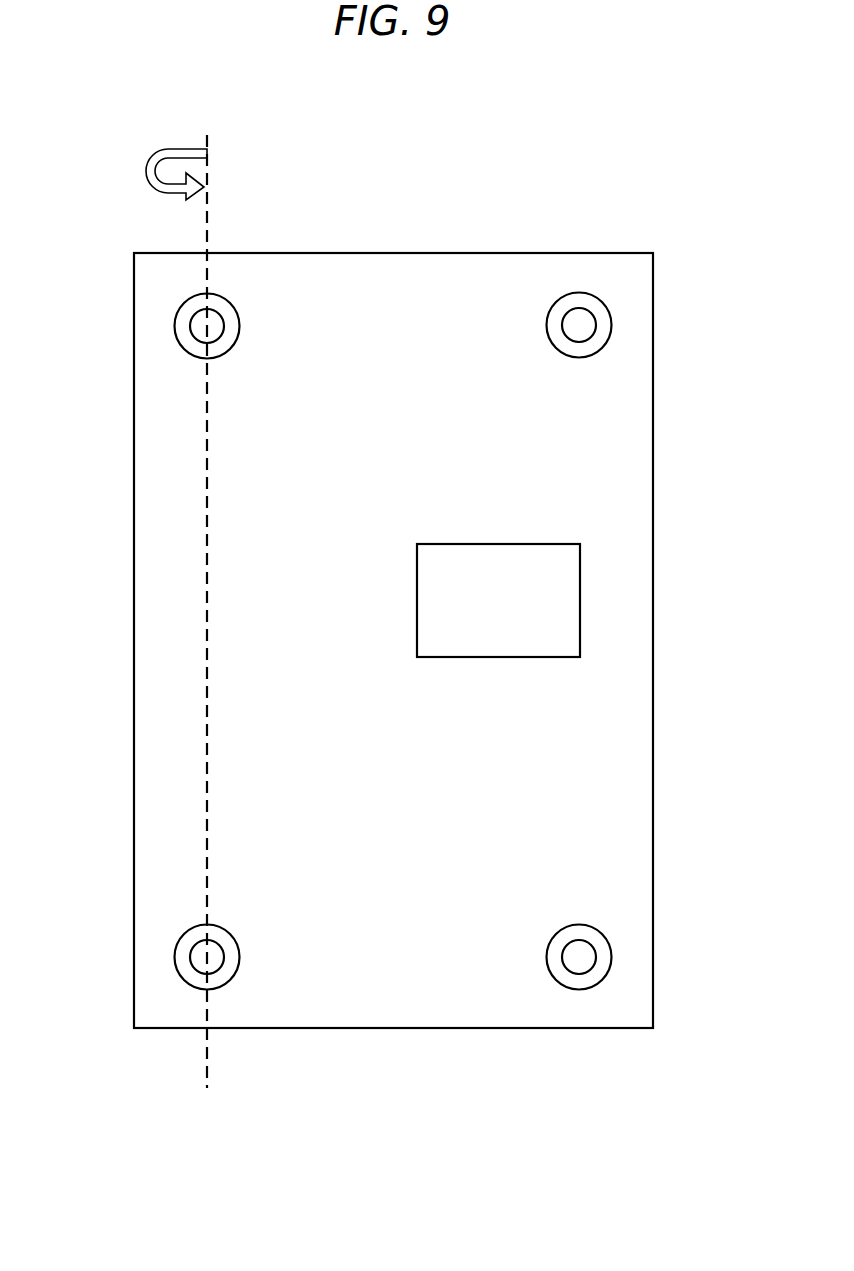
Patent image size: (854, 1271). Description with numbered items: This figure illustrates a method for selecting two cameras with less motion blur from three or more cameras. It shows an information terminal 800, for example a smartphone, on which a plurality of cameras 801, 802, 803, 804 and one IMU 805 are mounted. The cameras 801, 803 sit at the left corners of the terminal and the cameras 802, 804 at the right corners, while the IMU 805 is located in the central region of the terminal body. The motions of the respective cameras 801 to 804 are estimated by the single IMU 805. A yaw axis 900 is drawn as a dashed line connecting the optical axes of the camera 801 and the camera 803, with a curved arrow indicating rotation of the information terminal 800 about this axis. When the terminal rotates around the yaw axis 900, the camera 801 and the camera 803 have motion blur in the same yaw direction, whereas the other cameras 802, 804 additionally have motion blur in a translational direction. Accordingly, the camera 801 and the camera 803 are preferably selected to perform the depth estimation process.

The information terminal 800 is at (393, 1022).
The camera 801 is at (185, 322).
The camera 802 is at (603, 325).
The camera 803 is at (185, 958).
The camera 804 is at (602, 960).
The IMU 805 is at (498, 600).
The yaw axis 900 is at (207, 238).